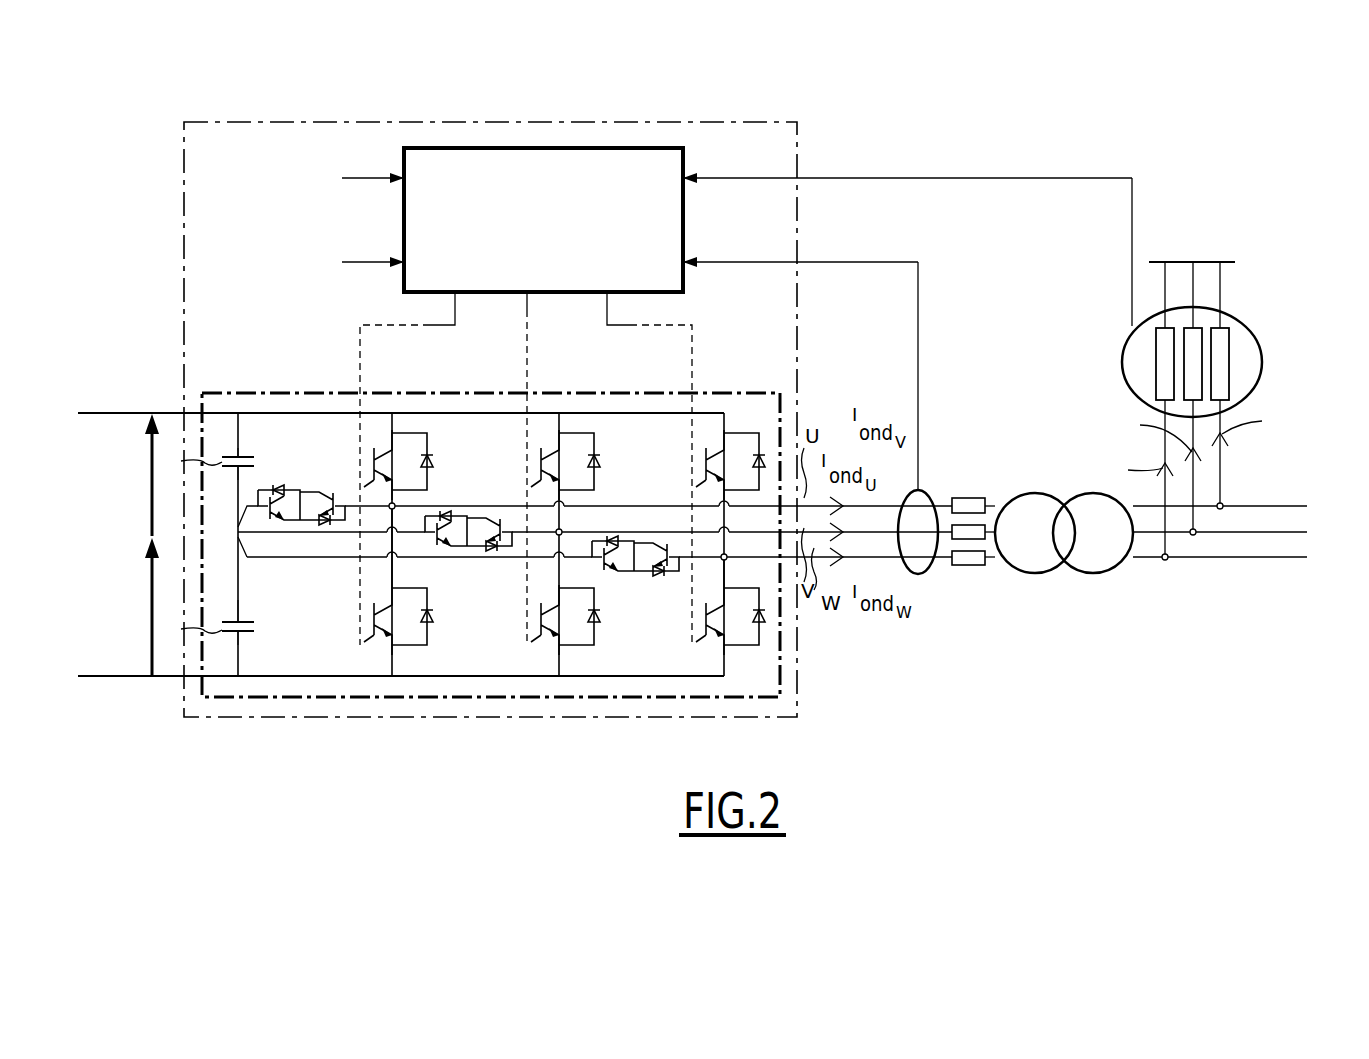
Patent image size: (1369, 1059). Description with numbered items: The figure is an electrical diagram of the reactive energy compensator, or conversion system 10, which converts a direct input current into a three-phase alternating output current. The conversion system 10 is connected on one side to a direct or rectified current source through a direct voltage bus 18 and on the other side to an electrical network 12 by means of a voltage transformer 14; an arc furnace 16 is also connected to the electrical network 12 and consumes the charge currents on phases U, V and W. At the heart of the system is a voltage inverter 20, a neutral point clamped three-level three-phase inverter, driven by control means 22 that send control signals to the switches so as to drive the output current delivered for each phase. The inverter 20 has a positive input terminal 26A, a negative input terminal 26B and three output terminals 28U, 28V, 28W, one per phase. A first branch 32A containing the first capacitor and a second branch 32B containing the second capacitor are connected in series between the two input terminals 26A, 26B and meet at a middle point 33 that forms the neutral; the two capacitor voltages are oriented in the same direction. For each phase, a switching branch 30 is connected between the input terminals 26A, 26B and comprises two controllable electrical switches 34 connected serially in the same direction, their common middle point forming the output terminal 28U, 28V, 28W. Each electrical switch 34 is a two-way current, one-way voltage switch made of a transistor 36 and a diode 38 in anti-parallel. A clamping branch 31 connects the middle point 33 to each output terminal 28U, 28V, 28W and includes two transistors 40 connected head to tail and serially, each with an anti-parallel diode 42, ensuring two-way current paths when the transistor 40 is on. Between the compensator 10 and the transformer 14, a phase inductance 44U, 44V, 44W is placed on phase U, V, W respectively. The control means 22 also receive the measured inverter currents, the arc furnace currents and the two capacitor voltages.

The conversion system 10 is at (184, 190).
The electrical network 12 is at (1262, 572).
The voltage transformer 14 is at (1090, 575).
The arc furnace 16 is at (1125, 350).
The direct voltage bus 18 is at (168, 398).
The voltage inverter 20 is at (285, 393).
The control means 22 is at (709, 319).
The positive input terminal 26A is at (238, 410).
The negative input terminal 26B is at (237, 677).
The output terminal 28U is at (396, 506).
The output terminal 28V is at (563, 532).
The output terminal 28W is at (727, 562).
The switching branch 30 is at (394, 572).
The clamping branch 31 is at (352, 496).
The first branch 32A is at (239, 437).
The second branch 32B is at (238, 618).
The middle point 33 is at (238, 533).
The controllable electrical switch 34 is at (360, 454).
The transistor 36 is at (530, 463).
The diode 38 is at (600, 412).
The transistor 40 is at (309, 496).
The diode 42 is at (278, 489).
The phase inductance 44U is at (966, 498).
The phase inductance 44V is at (960, 534).
The phase inductance 44W is at (975, 568).